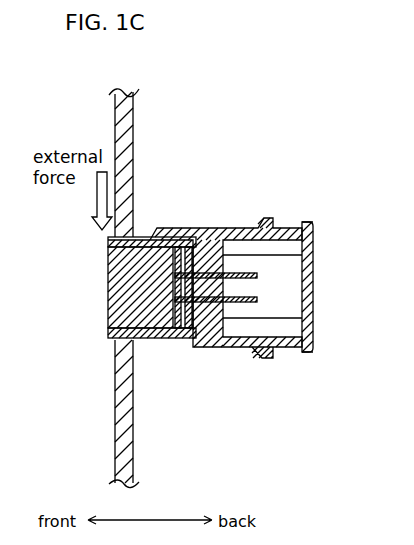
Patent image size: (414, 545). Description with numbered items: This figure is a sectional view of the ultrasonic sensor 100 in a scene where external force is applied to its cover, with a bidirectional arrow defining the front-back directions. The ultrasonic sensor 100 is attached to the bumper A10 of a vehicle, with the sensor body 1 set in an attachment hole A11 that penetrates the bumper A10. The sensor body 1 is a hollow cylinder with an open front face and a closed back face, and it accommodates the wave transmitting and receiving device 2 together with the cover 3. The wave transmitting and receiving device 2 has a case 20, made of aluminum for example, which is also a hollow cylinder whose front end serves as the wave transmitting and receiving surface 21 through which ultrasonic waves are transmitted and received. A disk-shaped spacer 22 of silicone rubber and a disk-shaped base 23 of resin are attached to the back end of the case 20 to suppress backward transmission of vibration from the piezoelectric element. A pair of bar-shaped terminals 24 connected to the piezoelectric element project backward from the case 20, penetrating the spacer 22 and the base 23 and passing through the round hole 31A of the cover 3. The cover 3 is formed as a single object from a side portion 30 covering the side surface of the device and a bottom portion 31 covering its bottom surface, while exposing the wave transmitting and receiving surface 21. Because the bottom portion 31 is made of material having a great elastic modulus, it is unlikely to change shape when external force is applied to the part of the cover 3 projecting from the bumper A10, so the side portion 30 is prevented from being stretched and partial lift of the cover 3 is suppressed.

The bumper A10 is at (120, 116).
The attachment hole A11 is at (118, 238).
The cover 3 is at (101, 238).
The wave transmitting and receiving device 2 is at (119, 313).
The case 20 is at (120, 292).
The wave transmitting and receiving surface 21 is at (108, 262).
The spacer 22 is at (160, 343).
The base 23 is at (183, 332).
The side portion 30 is at (165, 237).
The bottom portion 31 is at (197, 243).
The hole 31A is at (225, 236).
The sensor body 1 is at (327, 243).
The ultrasonic sensor 100 is at (323, 203).
The terminals 24 is at (257, 300).